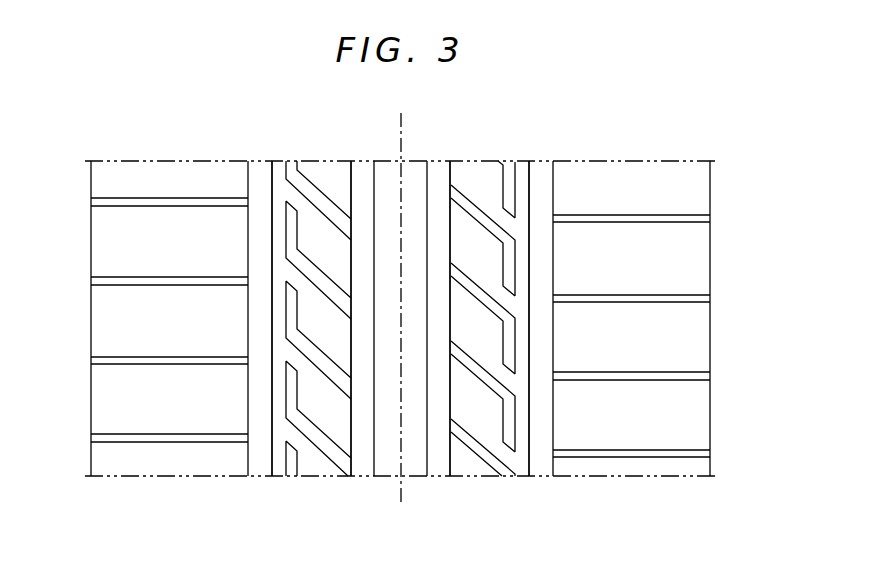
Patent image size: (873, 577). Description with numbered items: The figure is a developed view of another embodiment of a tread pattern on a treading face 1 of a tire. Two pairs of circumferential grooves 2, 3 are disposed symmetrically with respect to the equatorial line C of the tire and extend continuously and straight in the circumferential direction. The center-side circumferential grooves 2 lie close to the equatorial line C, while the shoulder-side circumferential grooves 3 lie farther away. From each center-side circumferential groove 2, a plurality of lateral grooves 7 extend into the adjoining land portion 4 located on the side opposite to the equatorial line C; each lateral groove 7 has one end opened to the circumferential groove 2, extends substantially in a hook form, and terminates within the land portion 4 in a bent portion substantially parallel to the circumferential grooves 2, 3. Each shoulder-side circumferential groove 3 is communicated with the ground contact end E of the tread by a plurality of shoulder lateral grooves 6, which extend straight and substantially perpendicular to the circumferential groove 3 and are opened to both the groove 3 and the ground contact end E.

The treading face 1 is at (405, 481).
The center-side circumferential groove 2 is at (360, 171).
The shoulder-side circumferential groove 3 is at (261, 172).
The land portion 4 is at (303, 455).
The shoulder lateral groove 6 is at (177, 280).
The lateral groove 7 is at (317, 280).
The equatorial line C is at (401, 296).
The ground contact end E is at (88, 292).